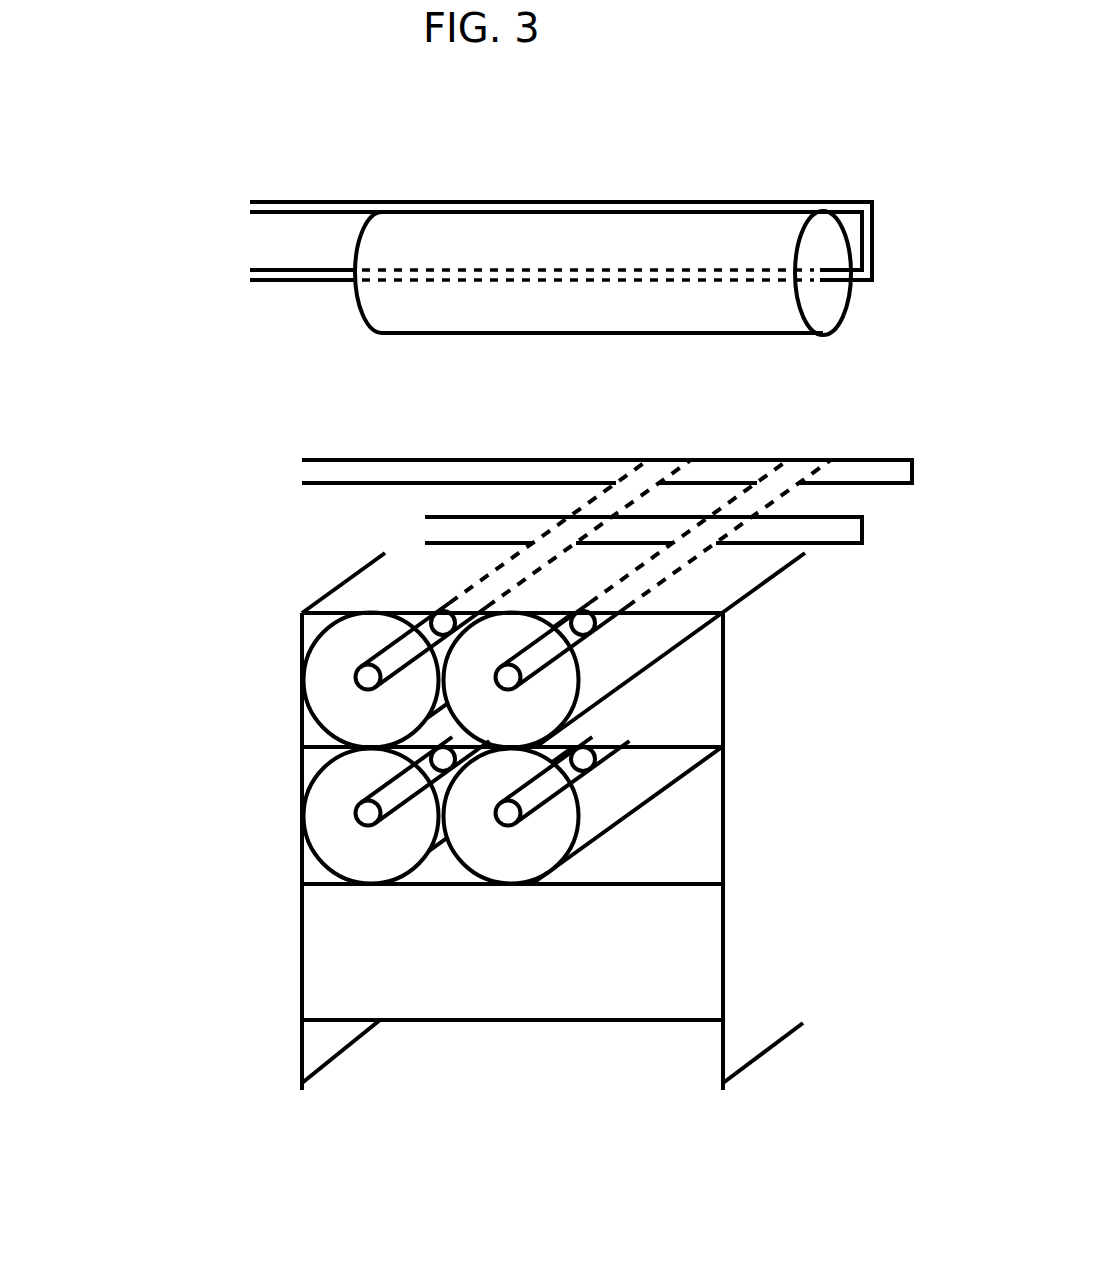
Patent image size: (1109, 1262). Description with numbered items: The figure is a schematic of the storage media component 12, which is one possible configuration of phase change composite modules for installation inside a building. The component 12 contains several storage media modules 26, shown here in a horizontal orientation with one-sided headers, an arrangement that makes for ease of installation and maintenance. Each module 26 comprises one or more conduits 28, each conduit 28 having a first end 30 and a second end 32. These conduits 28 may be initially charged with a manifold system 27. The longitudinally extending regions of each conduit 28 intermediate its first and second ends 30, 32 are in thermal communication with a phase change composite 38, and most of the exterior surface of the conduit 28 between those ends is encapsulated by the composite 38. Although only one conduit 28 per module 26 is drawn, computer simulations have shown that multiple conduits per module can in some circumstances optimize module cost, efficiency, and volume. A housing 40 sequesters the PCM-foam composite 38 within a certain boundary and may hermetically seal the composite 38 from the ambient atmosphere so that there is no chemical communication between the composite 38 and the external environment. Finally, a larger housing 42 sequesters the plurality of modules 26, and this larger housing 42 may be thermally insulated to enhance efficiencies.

The storage media component 12 is at (683, 1035).
The storage module 26 is at (303, 780).
The manifold system 27 is at (895, 488).
The conduit 28 is at (575, 268).
The first end 30 is at (863, 257).
The second end 32 is at (243, 283).
The phase change composite 38 is at (509, 858).
The housing 40 is at (509, 337).
The larger housing 42 is at (786, 1035).